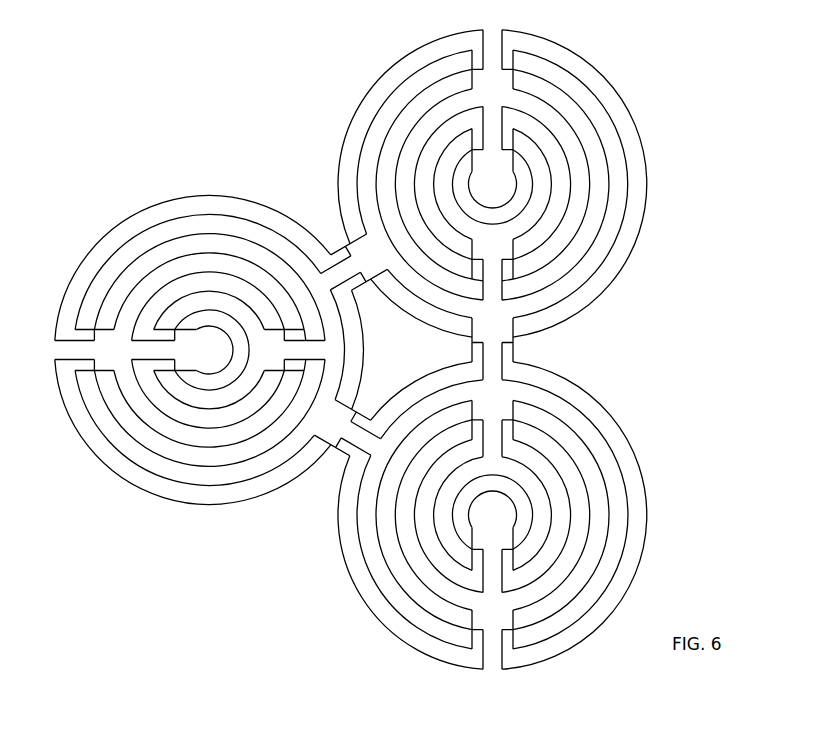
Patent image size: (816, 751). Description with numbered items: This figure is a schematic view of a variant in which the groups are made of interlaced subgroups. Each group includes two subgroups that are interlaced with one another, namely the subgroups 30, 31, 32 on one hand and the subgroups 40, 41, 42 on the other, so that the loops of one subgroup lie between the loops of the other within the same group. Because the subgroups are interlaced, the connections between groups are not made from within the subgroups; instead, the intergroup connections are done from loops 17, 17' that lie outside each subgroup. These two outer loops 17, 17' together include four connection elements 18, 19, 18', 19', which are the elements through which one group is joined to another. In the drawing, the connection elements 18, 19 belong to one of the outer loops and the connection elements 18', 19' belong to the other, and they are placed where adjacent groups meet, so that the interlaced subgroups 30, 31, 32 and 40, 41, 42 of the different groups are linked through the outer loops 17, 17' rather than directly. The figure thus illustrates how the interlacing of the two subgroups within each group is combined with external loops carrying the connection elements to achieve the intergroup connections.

The outer loop 17 is at (549, 349).
The outer loop 17' is at (205, 330).
The connection element 18 is at (336, 482).
The connection element 18' is at (557, 349).
The connection element 19 is at (363, 393).
The connection element 19' is at (428, 349).
The interlaced subgroup 30 is at (549, 183).
The interlaced subgroup 31 is at (536, 515).
The interlaced subgroup 32 is at (191, 382).
The interlaced subgroup 40 is at (624, 127).
The interlaced subgroup 41 is at (633, 513).
The interlaced subgroup 42 is at (92, 450).